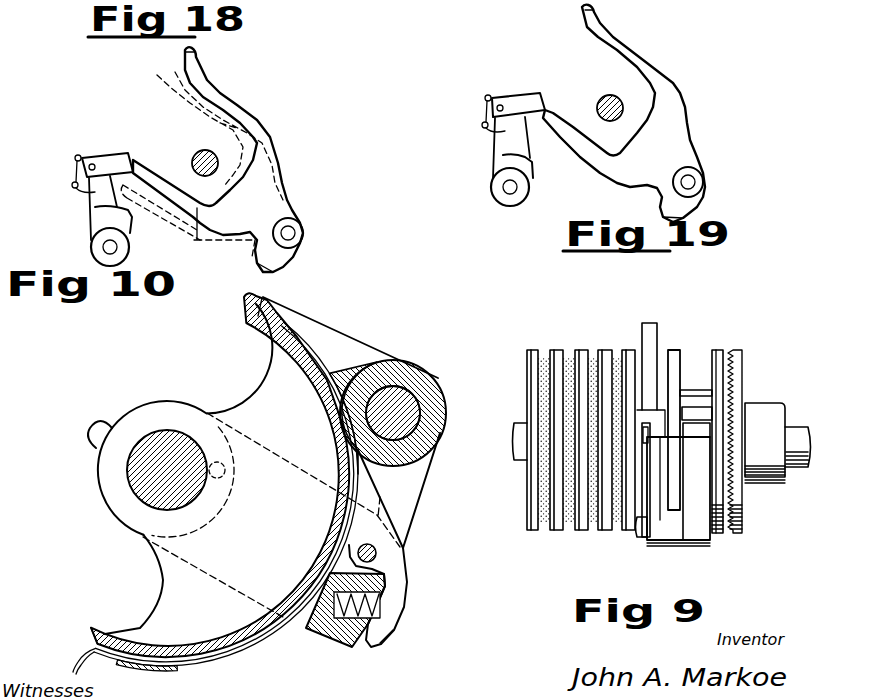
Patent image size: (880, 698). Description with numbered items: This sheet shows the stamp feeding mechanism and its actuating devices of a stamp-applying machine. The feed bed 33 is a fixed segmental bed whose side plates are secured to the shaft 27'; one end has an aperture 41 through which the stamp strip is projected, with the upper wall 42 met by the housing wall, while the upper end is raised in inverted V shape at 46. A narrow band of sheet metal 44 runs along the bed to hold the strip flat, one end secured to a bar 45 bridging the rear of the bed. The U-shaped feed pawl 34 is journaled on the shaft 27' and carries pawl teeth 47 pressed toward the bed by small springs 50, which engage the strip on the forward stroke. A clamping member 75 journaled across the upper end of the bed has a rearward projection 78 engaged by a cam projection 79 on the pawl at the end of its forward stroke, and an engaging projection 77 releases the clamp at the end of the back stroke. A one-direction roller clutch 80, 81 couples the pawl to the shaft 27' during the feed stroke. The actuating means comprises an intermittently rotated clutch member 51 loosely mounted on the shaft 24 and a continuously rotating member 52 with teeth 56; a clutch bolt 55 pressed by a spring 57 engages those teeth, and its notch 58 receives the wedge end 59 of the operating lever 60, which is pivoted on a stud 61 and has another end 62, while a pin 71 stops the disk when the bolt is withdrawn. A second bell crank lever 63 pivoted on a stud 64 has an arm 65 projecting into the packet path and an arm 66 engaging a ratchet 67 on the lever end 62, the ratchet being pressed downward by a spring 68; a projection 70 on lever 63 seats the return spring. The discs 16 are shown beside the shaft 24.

In FIG. 9, the friction discs 16 is at (566, 353).
In FIG. 18, the shaft 24 is at (200, 155).
In FIG. 19, the shaft 24 is at (607, 97).
In FIG. 9, the shaft 24 is at (520, 440).
In FIG. 10, the shaft 27' is at (136, 489).
In FIG. 10, the feed bed 33 is at (268, 465).
In FIG. 10, the feed pawl 34 is at (330, 642).
In FIG. 10, the aperture 41 is at (93, 648).
In FIG. 10, the upper wall 42 is at (320, 343).
In FIG. 10, the band of sheet metal 44 is at (252, 647).
In FIG. 10, the bar 45 is at (173, 670).
In FIG. 10, the raised portion 46 is at (262, 299).
In FIG. 10, the pawl teeth 47 is at (405, 634).
In FIG. 10, the springs 50 is at (377, 611).
In FIG. 9, the intermittently rotated clutch member 51 is at (672, 350).
In FIG. 9, the continuously rotating clutch member 52 is at (743, 361).
In FIG. 9, the clutch bolt 55 is at (723, 407).
In FIG. 9, the teeth 56 is at (745, 487).
In FIG. 9, the spring 57 is at (718, 350).
In FIG. 9, the notch 58 is at (703, 426).
In FIG. 9, the end of operating lever 59 is at (697, 481).
In FIG. 18, the operating lever 60 is at (128, 227).
In FIG. 19, the operating lever 60 is at (530, 170).
In FIG. 9, the operating lever 60 is at (697, 507).
In FIG. 18, the stud 61 is at (107, 247).
In FIG. 19, the stud 61 is at (512, 185).
In FIG. 9, the stud 61 is at (652, 507).
In FIG. 18, the end of operating lever 62 is at (100, 198).
In FIG. 19, the end of operating lever 62 is at (502, 145).
In FIG. 9, the end of operating lever 62 is at (643, 527).
In FIG. 18, the second bell crank lever 63 is at (277, 203).
In FIG. 19, the second bell crank lever 63 is at (678, 145).
In FIG. 18, the stud 64 is at (290, 233).
In FIG. 19, the stud 64 is at (692, 182).
In FIG. 18, the arm 65 is at (184, 55).
In FIG. 19, the arm 65 is at (593, 23).
In FIG. 9, the arm 65 is at (650, 328).
In FIG. 18, the arm 66 is at (188, 226).
In FIG. 19, the arm 66 is at (545, 117).
In FIG. 18, the ratchet 67 is at (104, 157).
In FIG. 19, the ratchet 67 is at (513, 100).
In FIG. 9, the ratchet 67 is at (647, 450).
In FIG. 18, the spring 68 is at (75, 173).
In FIG. 19, the spring 68 is at (483, 115).
In FIG. 18, the projection 70 is at (277, 262).
In FIG. 19, the projection 70 is at (677, 212).
In FIG. 9, the pin 71 is at (688, 392).
In FIG. 10, the clamping member 75 is at (407, 403).
In FIG. 10, the engaging projection 77 is at (92, 425).
In FIG. 10, the rearward projection 78 is at (392, 527).
In FIG. 10, the cam projection 79 is at (417, 478).
In FIG. 10, the roller clutch 80 is at (227, 470).
In FIG. 10, the roller clutch 81 is at (230, 493).